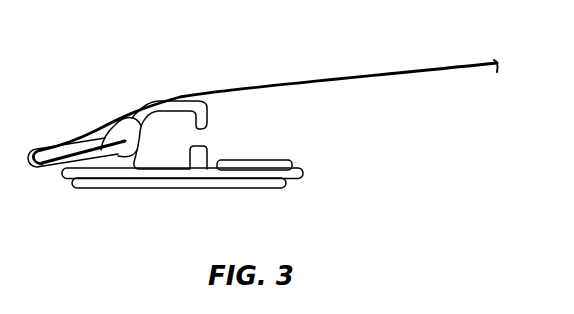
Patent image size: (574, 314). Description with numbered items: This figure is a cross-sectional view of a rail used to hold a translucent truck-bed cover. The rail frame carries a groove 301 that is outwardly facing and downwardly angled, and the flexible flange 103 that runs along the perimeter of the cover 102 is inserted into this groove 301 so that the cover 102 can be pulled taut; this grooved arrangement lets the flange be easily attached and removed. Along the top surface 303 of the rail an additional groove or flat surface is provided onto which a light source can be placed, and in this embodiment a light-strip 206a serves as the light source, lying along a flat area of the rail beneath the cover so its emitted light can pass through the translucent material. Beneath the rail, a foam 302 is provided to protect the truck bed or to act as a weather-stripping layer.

The cover 102 is at (340, 80).
The flexible flange 103 is at (93, 142).
The top surface 303 is at (133, 118).
The light-strip 206a is at (238, 163).
The groove 301 is at (95, 162).
The foam 302 is at (212, 189).